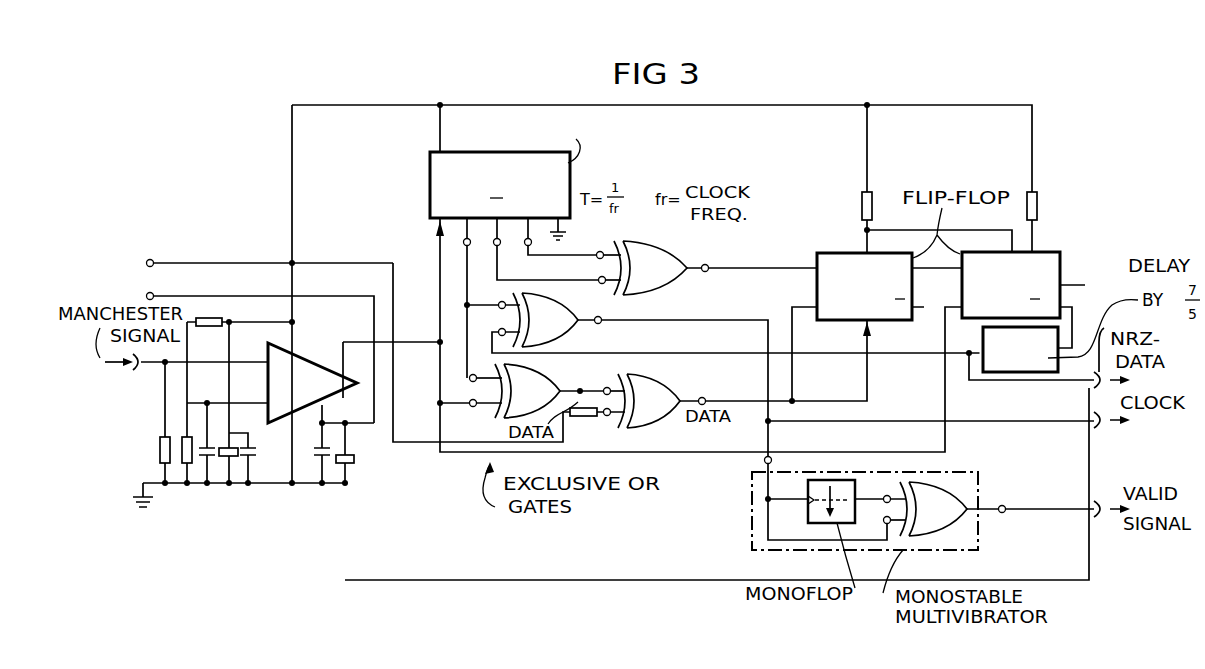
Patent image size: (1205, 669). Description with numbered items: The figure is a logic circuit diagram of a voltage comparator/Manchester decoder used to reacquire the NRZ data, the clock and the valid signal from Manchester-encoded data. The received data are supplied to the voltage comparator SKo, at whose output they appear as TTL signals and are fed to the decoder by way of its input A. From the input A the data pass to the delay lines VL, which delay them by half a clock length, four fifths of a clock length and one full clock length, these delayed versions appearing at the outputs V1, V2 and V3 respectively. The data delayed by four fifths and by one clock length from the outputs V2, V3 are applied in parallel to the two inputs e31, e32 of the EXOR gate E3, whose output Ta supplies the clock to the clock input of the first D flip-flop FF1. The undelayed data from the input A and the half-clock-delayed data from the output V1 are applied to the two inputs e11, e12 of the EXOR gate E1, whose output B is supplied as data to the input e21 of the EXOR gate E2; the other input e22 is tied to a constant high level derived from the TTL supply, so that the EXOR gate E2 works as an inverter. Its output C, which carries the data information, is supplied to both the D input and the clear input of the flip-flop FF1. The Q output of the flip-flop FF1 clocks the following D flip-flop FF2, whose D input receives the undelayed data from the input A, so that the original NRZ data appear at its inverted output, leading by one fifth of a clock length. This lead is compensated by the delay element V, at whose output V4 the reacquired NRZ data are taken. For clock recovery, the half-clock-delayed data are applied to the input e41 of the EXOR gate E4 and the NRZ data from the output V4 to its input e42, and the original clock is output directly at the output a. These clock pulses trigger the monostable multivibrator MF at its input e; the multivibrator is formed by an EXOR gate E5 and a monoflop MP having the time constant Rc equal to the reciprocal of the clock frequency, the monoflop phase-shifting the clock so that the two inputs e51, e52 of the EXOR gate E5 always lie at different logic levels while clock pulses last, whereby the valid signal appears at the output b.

The delay lines VL is at (430, 200).
The output of the delay lines V1 is at (458, 298).
The output of the delay lines V2 is at (537, 249).
The output of the delay lines V3 is at (552, 236).
The input A is at (652, 335).
The EXOR gate E1 is at (527, 391).
The EXOR gate E2 is at (649, 401).
The EXOR gate E3 is at (650, 268).
The EXOR gate E4 is at (545, 320).
The EXOR gate E5 is at (933, 509).
The input of the EXOR gate E1 e11 is at (485, 369).
The input of the EXOR gate E1 e12 is at (471, 413).
The input of the EXOR gate E2 e21 is at (608, 382).
The input of the EXOR gate E2 e22 is at (509, 352).
The input of the EXOR gate E3 e31 is at (602, 245).
The input of the EXOR gate E3 e32 is at (604, 289).
The input of the EXOR gate E4 e41 is at (492, 297).
The input of the EXOR gate E4 e42 is at (724, 333).
The input of the EXOR gate E5 e51 is at (880, 491).
The input of the EXOR gate E5 e52 is at (880, 531).
The output of the EXOR gate E3 Ta is at (752, 257).
The output of the EXOR gate E4 a is at (673, 387).
The output of the EXOR gate E1 B is at (582, 381).
The output of the EXOR gate E2 C is at (775, 356).
The output of the monostable multivibrator b is at (1030, 497).
The input of the monostable multivibrator e is at (819, 497).
The D flip-flop FF1 is at (847, 252).
The D flip-flop FF2 is at (1060, 262).
The delay element V is at (1007, 373).
The output of the delay element V4 is at (1026, 356).
The monostable multivibrator MF is at (752, 507).
The monoflop MP is at (808, 520).
The time constant Rc is at (903, 464).
The voltage comparator SKo is at (253, 497).